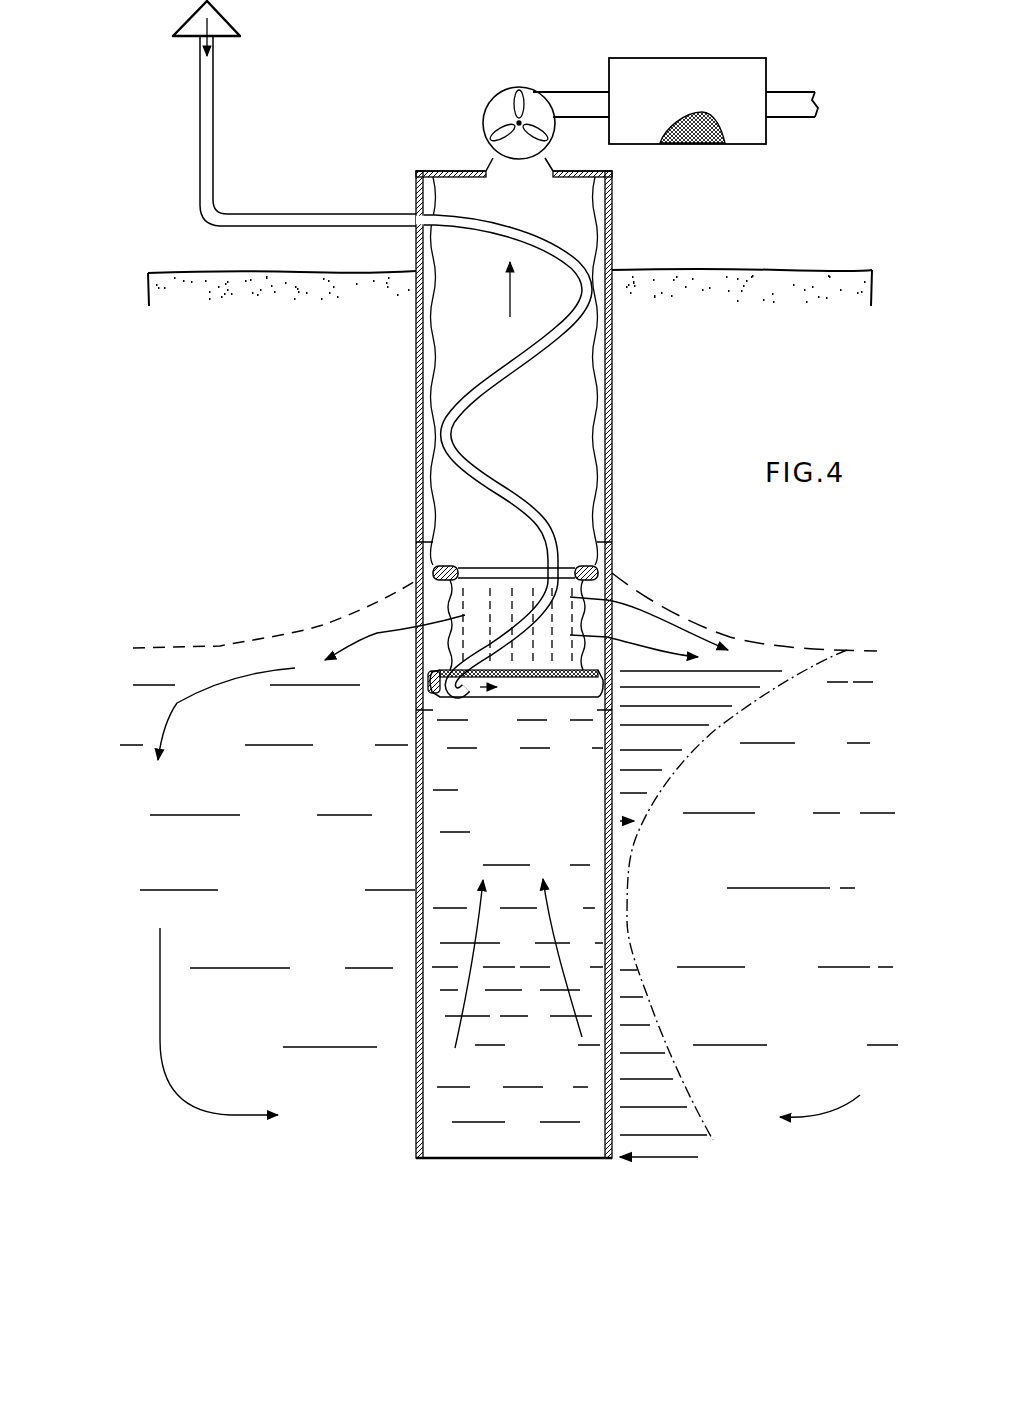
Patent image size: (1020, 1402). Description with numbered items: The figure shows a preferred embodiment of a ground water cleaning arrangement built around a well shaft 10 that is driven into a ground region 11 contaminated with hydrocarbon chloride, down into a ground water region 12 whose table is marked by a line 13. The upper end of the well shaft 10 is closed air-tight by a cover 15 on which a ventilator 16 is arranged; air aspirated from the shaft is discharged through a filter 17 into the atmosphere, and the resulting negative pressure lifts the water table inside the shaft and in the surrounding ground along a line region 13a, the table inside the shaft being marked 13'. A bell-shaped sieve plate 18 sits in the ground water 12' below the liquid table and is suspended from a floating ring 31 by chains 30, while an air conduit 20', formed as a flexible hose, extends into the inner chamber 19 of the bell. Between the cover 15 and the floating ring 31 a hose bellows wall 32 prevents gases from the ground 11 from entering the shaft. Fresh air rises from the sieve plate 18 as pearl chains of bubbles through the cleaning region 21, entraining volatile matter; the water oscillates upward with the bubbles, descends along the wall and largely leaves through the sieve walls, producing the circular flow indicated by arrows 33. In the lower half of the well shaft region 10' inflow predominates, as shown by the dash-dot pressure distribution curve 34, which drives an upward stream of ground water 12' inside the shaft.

The well shaft 10 is at (535, 664).
The lower half of the well shaft region 10' is at (635, 860).
The ground region 11 is at (292, 406).
The ground water region 12 is at (509, 864).
The ground water 12' is at (517, 921).
The ground water table 13 is at (150, 618).
The ground water table inside the well shaft 13' is at (516, 546).
The line region of the lifted ground water table 13a is at (283, 635).
The cover 15 is at (447, 168).
The ventilator 16 is at (500, 124).
The filter 17 is at (695, 136).
The bell-shaped sieve plate 18 is at (542, 680).
The inner chamber of the bell 19 is at (518, 690).
The air conduit 20' is at (501, 456).
The cleaning region 21 is at (468, 618).
The chains 30 is at (570, 597).
The floating ring 31 is at (613, 545).
The hose bellows wall 32 is at (612, 337).
The arrow 33 is at (377, 633).
The pressure distribution curve 34 is at (680, 762).